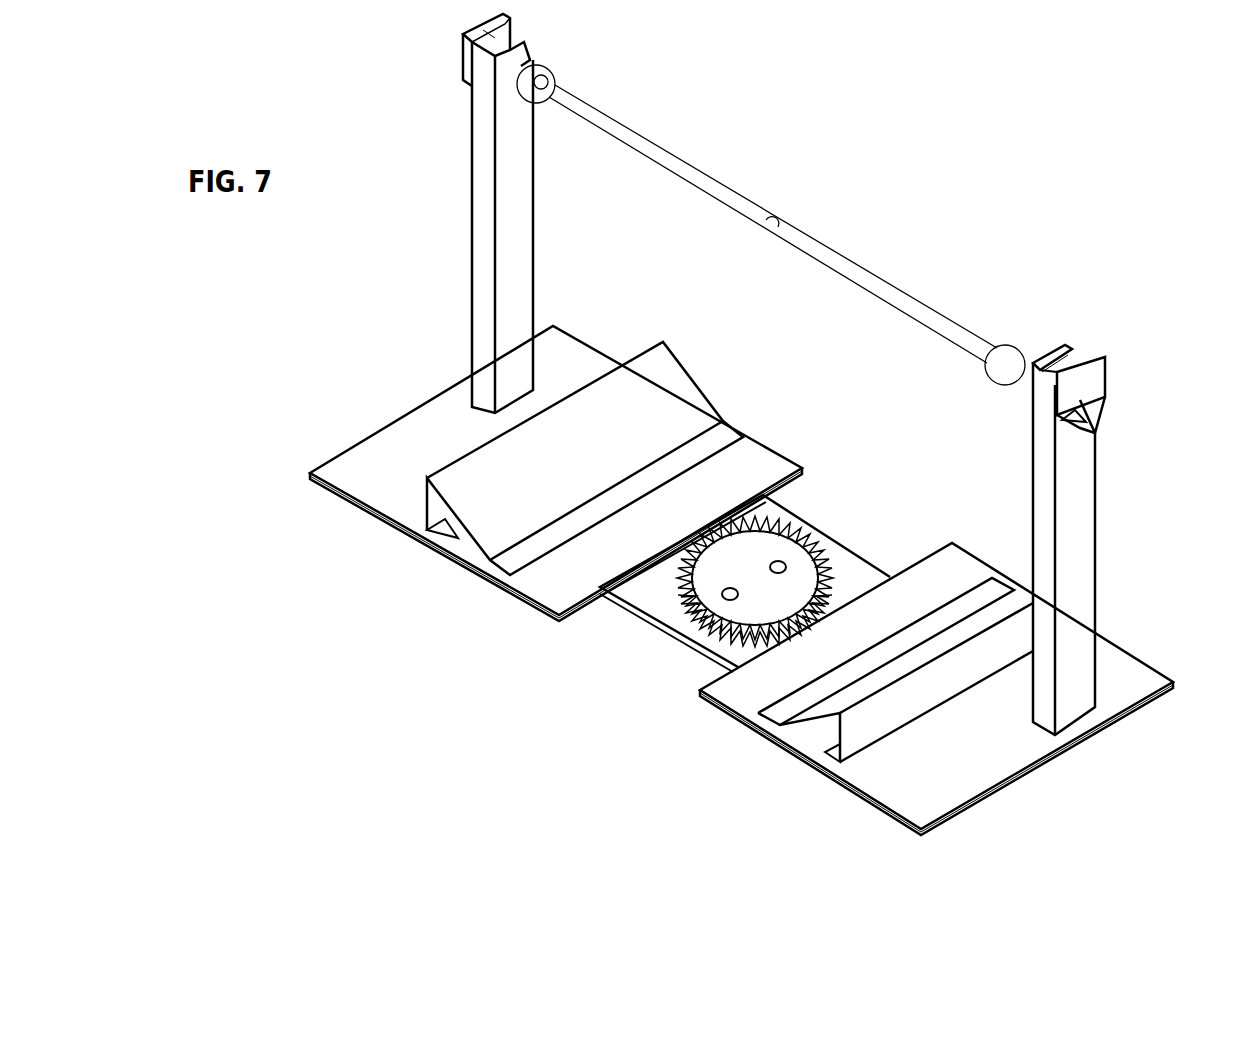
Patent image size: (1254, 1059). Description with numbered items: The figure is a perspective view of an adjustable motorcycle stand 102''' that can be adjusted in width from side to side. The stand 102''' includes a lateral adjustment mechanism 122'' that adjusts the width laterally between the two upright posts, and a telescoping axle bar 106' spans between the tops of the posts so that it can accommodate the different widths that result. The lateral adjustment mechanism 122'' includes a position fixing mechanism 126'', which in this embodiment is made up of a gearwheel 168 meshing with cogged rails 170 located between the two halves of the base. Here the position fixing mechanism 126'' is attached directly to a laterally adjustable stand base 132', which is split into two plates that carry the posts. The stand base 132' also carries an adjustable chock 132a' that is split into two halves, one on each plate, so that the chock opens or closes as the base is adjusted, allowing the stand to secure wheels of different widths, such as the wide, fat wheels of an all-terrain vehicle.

The telescoping axle bar 106' is at (771, 225).
The laterally adjustable stand base 132' is at (730, 573).
The adjustable chock 132a' is at (632, 552).
The position fixing mechanism 126'' is at (727, 588).
The lateral adjustment mechanism 122'' is at (487, 407).
The cogged rails 170 is at (827, 525).
The gearwheel 168 is at (722, 570).
The adjustable motorcycle stand 102''' is at (1112, 577).